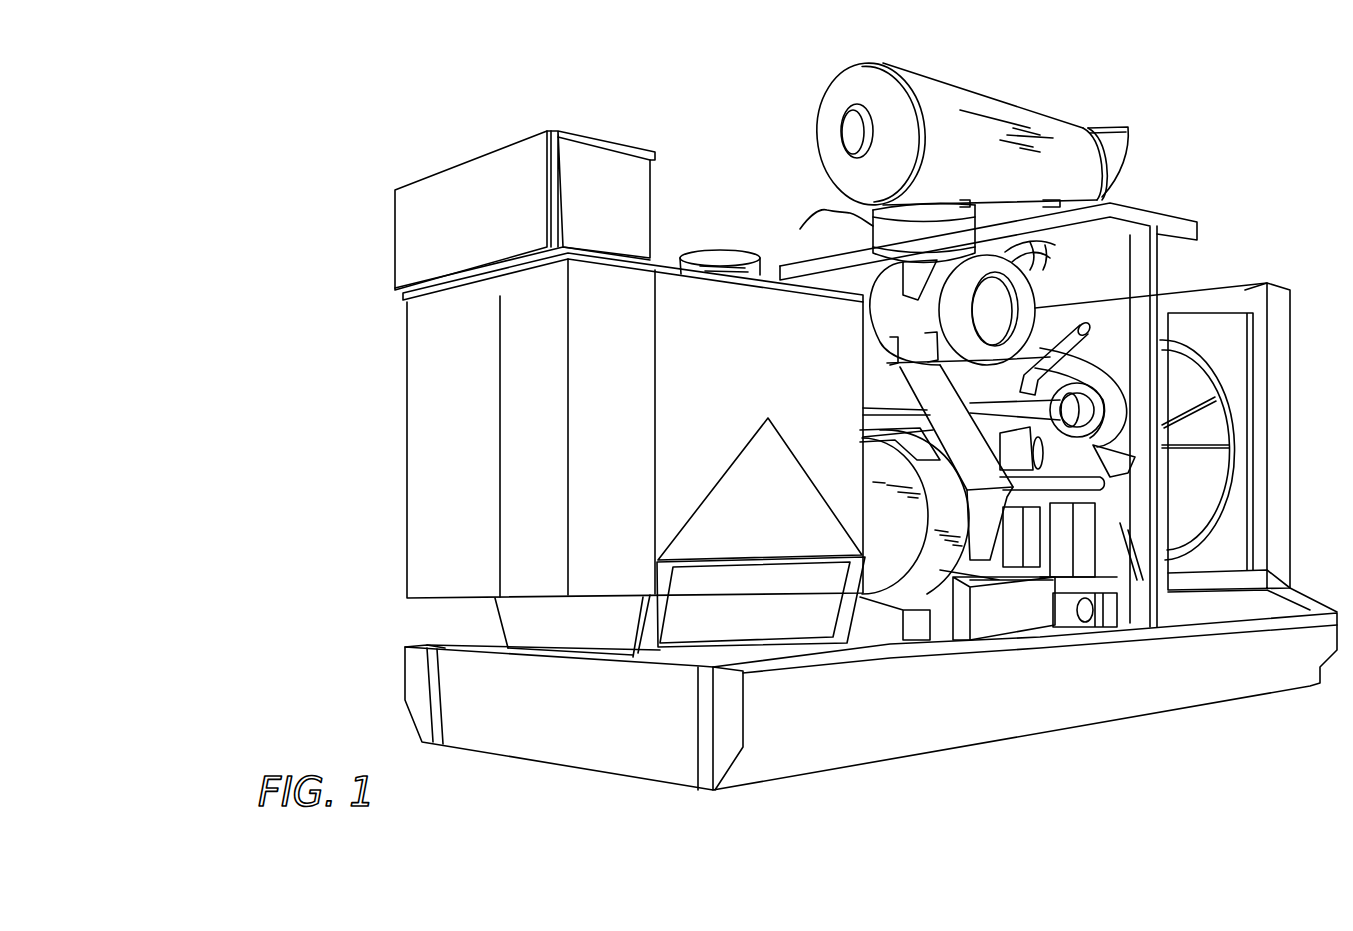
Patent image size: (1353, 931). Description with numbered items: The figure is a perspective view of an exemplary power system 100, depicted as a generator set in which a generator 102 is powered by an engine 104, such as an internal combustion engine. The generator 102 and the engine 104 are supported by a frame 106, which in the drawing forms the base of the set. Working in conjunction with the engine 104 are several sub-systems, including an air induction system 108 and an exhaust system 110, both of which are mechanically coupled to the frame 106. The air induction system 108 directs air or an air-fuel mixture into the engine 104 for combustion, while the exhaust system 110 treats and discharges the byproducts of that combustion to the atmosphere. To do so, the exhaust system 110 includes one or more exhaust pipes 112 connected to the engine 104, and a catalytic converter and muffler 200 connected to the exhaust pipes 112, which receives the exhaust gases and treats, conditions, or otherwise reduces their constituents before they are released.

The power system 100 is at (300, 168).
The generator 102 is at (897, 525).
The engine 104 is at (1022, 597).
The frame 106 is at (585, 705).
The air induction system 108 is at (803, 230).
The exhaust system 110 is at (1106, 107).
The exhaust pipes 112 is at (1050, 253).
The catalytic converter and muffler 200 is at (843, 84).